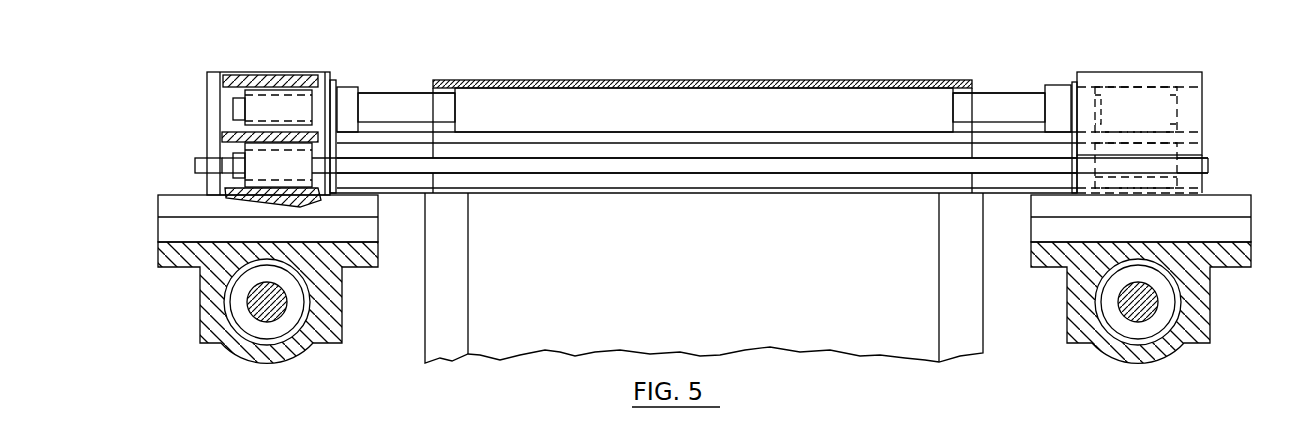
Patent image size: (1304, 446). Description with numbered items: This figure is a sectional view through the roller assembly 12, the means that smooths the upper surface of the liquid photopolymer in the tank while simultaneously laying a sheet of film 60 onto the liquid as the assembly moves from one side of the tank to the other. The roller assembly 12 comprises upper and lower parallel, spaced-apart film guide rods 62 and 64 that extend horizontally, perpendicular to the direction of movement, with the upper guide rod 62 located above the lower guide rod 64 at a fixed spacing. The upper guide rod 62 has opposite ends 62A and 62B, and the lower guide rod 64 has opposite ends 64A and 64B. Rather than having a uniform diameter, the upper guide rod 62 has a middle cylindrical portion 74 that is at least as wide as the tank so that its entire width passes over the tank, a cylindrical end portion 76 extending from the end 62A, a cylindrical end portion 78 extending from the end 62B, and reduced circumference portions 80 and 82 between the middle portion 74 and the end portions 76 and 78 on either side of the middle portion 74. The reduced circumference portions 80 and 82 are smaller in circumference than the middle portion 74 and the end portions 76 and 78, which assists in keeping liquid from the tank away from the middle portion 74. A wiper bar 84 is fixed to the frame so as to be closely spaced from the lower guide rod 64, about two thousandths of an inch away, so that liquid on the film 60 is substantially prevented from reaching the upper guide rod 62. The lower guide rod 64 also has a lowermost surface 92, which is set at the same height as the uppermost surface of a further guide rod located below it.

The roller assembly 12 is at (1108, 63).
The sheet of film 60 is at (868, 80).
The upper guide rod 62 is at (416, 92).
The end of upper guide rod 62A is at (233, 108).
The end of upper guide rod 62B is at (1178, 104).
The lower guide rod 64 is at (884, 175).
The end of lower guide rod 64A is at (233, 165).
The end of lower guide rod 64B is at (1207, 176).
The middle cylindrical portion 74 is at (543, 100).
The cylindrical end portion 76 is at (347, 85).
The cylindrical end portion 78 is at (1060, 83).
The reduced circumference portion 80 is at (397, 93).
The reduced circumference portion 82 is at (996, 93).
The wiper bar 84 is at (1208, 160).
The lowermost surface 92 is at (560, 190).